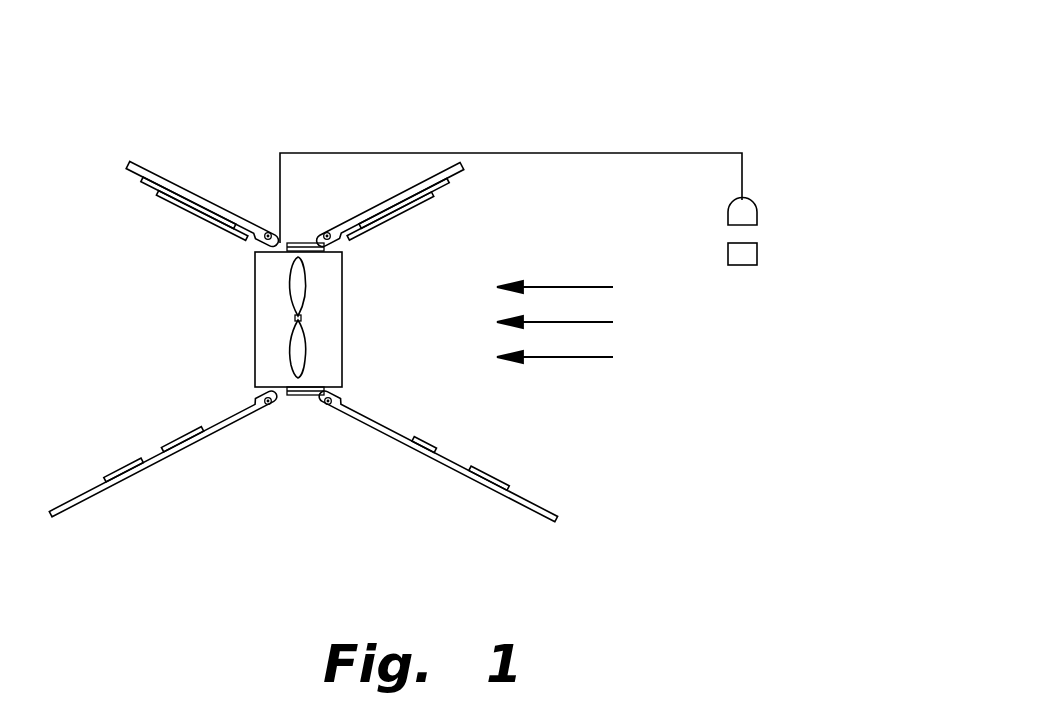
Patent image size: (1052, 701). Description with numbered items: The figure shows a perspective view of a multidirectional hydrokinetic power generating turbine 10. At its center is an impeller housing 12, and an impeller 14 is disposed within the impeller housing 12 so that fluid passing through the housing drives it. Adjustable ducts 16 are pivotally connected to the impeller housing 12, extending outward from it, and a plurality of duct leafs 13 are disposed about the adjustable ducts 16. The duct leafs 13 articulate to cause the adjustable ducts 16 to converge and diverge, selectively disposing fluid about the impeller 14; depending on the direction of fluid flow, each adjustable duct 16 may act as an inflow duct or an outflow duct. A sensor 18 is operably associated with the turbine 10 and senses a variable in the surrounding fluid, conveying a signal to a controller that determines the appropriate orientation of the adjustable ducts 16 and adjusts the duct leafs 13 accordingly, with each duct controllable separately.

The multidirectional hydrokinetic power generating turbine 10 is at (563, 104).
The impeller housing 12 is at (282, 405).
The duct leafs 13 is at (130, 165).
The impeller 14 is at (293, 335).
The adjustable ducts 16 is at (248, 212).
The sensor 18 is at (757, 212).